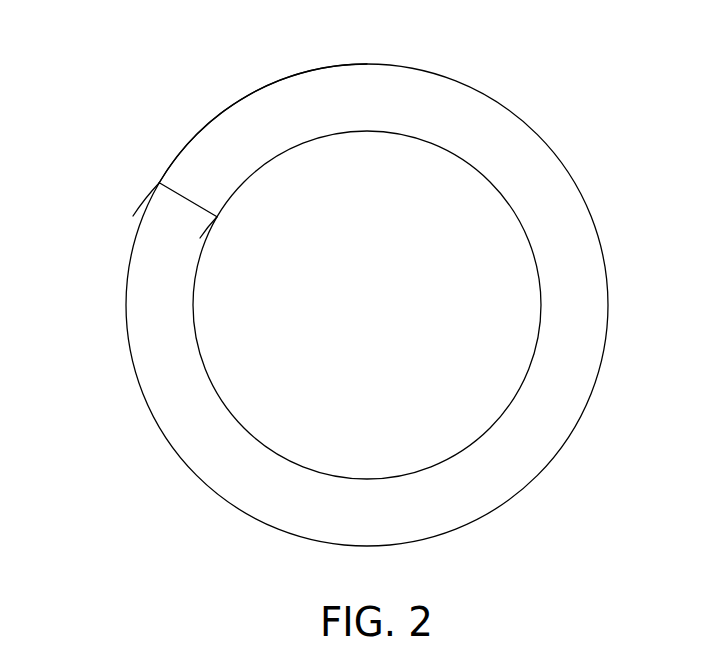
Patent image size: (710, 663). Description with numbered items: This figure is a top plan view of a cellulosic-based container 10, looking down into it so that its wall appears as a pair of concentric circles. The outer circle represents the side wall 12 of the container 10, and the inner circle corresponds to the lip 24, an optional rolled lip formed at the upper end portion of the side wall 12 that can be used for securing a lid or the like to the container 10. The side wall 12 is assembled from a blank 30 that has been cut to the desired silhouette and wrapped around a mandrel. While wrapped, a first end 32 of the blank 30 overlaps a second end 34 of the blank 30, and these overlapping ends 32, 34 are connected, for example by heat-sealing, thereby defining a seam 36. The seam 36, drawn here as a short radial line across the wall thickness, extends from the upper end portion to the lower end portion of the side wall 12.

The cellulosic-based container 10 is at (634, 116).
The side wall 12 is at (590, 293).
The lip 24 is at (518, 110).
The blank 30 is at (260, 88).
The first end 32 is at (148, 198).
The second end 34 is at (150, 203).
The seam 36 is at (188, 198).